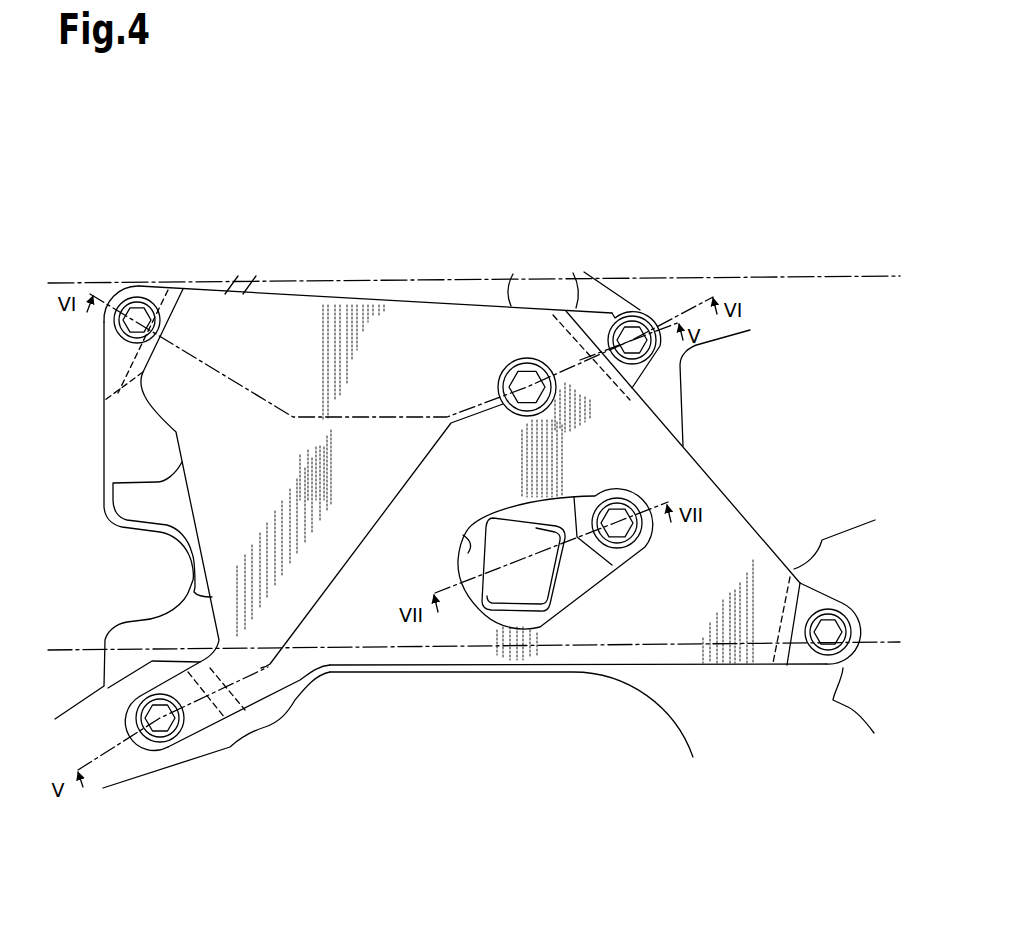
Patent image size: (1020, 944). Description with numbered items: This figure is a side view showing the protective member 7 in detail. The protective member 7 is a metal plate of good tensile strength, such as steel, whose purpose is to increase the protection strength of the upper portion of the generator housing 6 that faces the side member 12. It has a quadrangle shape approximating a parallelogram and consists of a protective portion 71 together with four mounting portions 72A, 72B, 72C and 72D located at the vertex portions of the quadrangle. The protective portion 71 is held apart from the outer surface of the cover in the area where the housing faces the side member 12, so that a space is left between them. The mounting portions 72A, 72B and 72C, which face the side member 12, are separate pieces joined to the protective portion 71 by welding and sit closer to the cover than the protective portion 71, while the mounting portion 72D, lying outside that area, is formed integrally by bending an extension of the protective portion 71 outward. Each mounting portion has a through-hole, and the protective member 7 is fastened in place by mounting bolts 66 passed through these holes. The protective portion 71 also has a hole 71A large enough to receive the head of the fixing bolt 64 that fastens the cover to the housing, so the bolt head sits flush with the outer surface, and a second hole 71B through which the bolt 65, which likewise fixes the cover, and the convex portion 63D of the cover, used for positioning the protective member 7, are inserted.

The generator housing 6 is at (485, 292).
The protective member 7 is at (435, 290).
The side member 12 is at (718, 278).
The convex portion 63D is at (541, 583).
The bolt (fixing bolt) 64 is at (520, 410).
The bolt 65 is at (622, 533).
The bolt (mounting bolt) 66 is at (133, 328).
The protective portion 71 is at (438, 660).
The hole 71A is at (545, 410).
The hole 71B is at (462, 541).
The mounting portion 72A is at (602, 317).
The mounting portion 72B is at (155, 306).
The mounting portion 72C is at (809, 655).
The mounting portion 72D is at (197, 718).